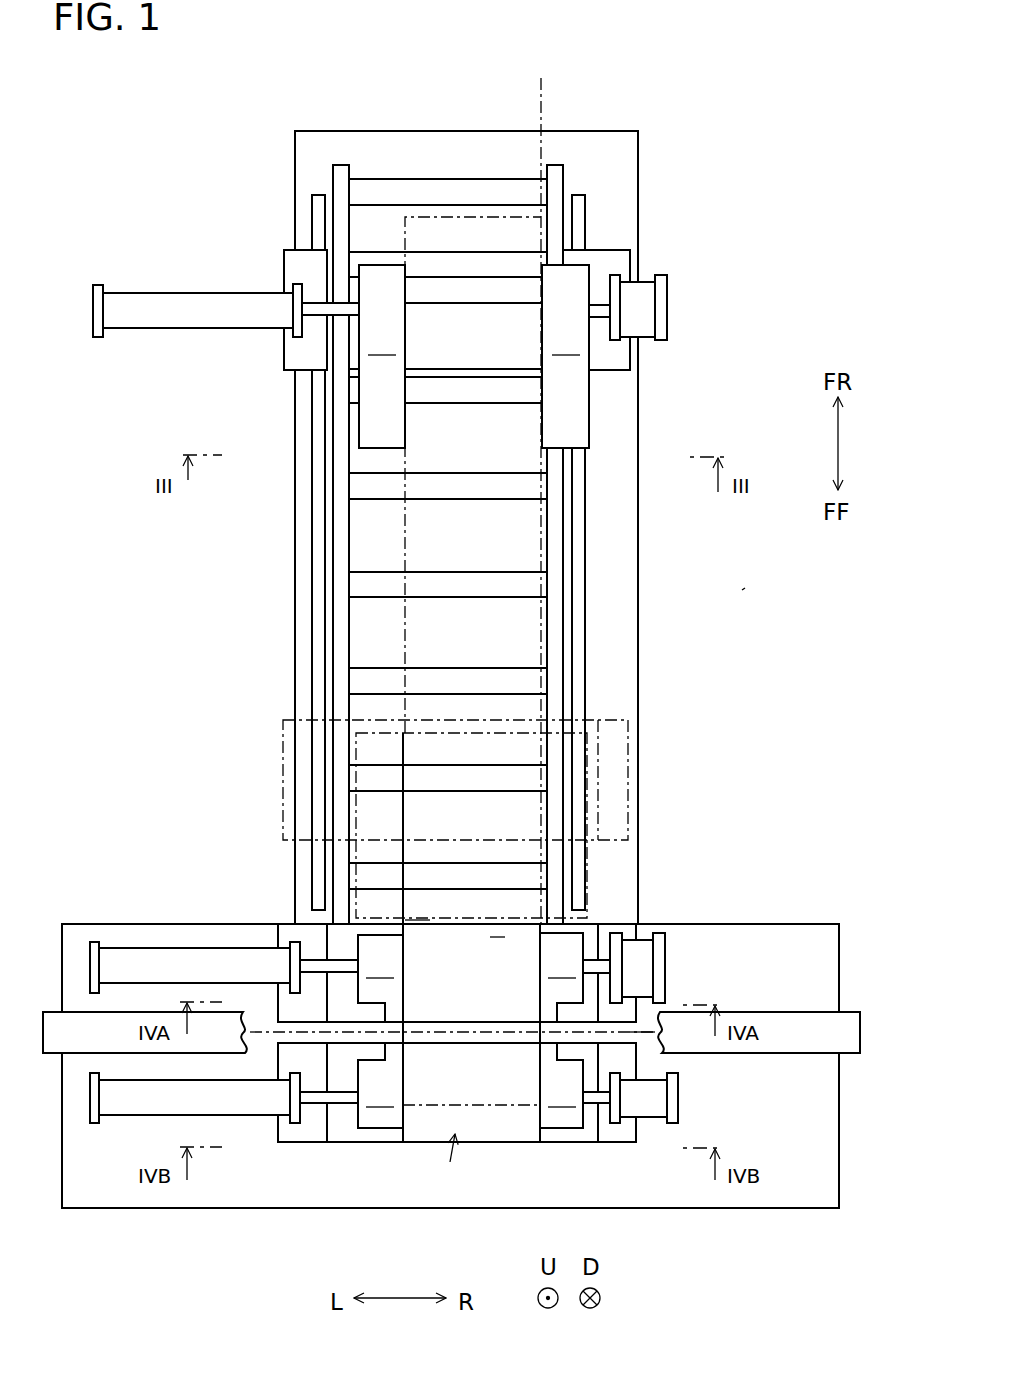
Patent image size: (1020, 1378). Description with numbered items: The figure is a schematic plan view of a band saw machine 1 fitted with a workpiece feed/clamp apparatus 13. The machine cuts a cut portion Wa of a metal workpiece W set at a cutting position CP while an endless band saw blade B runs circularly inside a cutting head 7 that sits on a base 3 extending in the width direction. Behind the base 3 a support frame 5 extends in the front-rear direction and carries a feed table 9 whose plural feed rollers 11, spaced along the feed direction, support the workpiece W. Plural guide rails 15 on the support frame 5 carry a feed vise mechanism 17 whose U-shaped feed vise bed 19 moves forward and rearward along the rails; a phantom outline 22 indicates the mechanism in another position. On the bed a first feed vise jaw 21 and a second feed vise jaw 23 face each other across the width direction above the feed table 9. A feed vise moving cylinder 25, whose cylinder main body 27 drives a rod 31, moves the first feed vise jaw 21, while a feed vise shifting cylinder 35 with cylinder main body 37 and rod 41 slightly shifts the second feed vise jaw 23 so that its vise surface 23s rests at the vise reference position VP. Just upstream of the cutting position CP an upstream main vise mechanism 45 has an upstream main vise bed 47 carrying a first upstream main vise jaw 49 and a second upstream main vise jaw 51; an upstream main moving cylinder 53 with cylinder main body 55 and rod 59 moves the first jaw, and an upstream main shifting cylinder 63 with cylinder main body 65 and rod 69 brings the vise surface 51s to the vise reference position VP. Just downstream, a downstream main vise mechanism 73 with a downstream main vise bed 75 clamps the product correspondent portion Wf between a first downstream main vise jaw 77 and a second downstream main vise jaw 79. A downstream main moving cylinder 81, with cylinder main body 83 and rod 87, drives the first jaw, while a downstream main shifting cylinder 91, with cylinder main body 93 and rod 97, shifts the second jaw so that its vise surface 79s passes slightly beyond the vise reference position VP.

The band saw machine 1 is at (745, 588).
The base 3 is at (810, 926).
The support frame 5 is at (615, 138).
The cutting head 7 is at (857, 1012).
The feed table 9 is at (335, 613).
The feed rollers 11 is at (465, 287).
The workpiece feed/clamp apparatus 13 is at (705, 806).
The guide rails 15 is at (312, 220).
The feed vise mechanism 17 is at (423, 246).
The feed vise bed 19 is at (284, 356).
The first feed vise jaw 21 is at (382, 356).
The lowered position outline 22 is at (588, 860).
The second feed vise jaw 23 is at (565, 356).
The vise surface 23s is at (541, 414).
The feed vise moving cylinder 25 is at (155, 291).
The cylinder main body 27 is at (165, 330).
The rod 31 is at (297, 372).
The feed vise shifting cylinder 35 is at (669, 292).
The cylinder main body 37 is at (658, 326).
The rod 41 is at (598, 322).
The upstream main vise mechanism 45 is at (432, 919).
The upstream main vise bed 47 is at (497, 937).
The first upstream main vise jaw 49 is at (380, 978).
The second upstream main vise jaw 51 is at (561, 977).
The vise surface 51s is at (539, 990).
The upstream main moving cylinder 53 is at (171, 947).
The cylinder main body 55 is at (128, 955).
The rod 59 is at (318, 966).
The upstream main shifting cylinder 63 is at (671, 944).
The cylinder main body 65 is at (662, 968).
The rod 69 is at (594, 963).
The downstream main vise mechanism 73 is at (450, 1210).
The downstream main vise bed 75 is at (480, 1143).
The first downstream main vise jaw 77 is at (380, 1085).
The second downstream main vise jaw 79 is at (561, 1085).
The vise surface 79s is at (535, 1122).
The downstream main moving cylinder 81 is at (120, 1118).
The cylinder main body 83 is at (248, 1110).
The rod 87 is at (342, 1102).
The downstream main shifting cylinder 91 is at (651, 1121).
The cylinder main body 93 is at (680, 1100).
The rod 97 is at (598, 1102).
The workpiece W is at (408, 535).
The vise reference position VP is at (545, 80).
The cutting position CP is at (437, 1030).
The cut portion Wa is at (492, 1034).
The product correspondent portion Wf is at (428, 1102).
The band saw blade B is at (643, 1035).